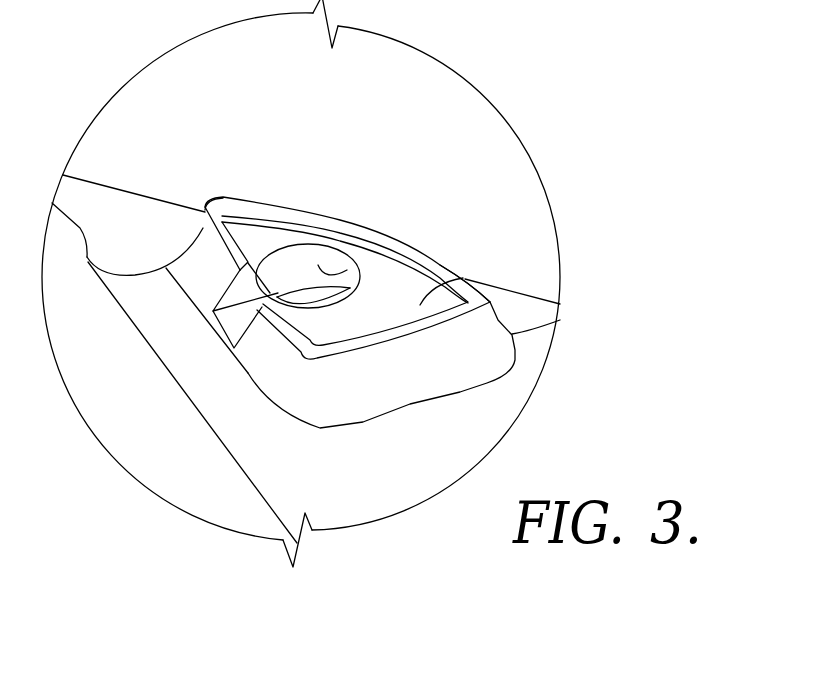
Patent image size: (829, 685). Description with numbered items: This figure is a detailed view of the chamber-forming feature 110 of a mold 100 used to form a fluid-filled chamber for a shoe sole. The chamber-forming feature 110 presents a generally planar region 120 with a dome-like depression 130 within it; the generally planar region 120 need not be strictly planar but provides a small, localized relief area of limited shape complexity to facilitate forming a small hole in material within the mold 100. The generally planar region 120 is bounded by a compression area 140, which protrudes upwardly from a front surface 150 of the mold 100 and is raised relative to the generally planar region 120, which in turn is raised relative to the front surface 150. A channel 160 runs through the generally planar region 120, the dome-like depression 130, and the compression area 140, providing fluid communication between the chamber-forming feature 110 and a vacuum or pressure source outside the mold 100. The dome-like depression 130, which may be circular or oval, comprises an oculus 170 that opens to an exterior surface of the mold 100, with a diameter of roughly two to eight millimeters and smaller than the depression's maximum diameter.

The mold 100 is at (270, 473).
The chamber-forming feature 110 is at (472, 261).
The generally planar region 120 is at (555, 305).
The dome-like depression 130 is at (354, 285).
The compression area 140 is at (225, 208).
The front surface 150 is at (354, 473).
The channel 160 is at (234, 331).
The oculus 170 is at (299, 290).